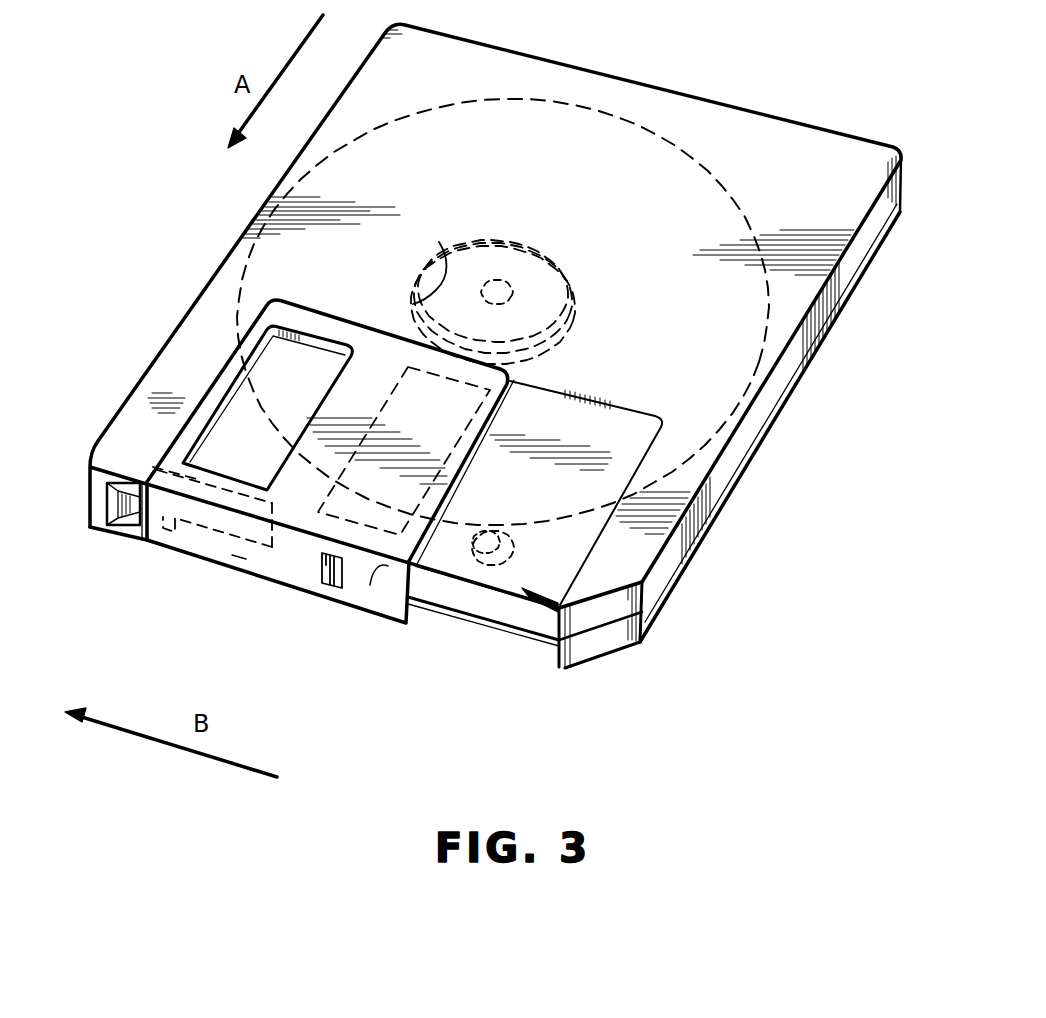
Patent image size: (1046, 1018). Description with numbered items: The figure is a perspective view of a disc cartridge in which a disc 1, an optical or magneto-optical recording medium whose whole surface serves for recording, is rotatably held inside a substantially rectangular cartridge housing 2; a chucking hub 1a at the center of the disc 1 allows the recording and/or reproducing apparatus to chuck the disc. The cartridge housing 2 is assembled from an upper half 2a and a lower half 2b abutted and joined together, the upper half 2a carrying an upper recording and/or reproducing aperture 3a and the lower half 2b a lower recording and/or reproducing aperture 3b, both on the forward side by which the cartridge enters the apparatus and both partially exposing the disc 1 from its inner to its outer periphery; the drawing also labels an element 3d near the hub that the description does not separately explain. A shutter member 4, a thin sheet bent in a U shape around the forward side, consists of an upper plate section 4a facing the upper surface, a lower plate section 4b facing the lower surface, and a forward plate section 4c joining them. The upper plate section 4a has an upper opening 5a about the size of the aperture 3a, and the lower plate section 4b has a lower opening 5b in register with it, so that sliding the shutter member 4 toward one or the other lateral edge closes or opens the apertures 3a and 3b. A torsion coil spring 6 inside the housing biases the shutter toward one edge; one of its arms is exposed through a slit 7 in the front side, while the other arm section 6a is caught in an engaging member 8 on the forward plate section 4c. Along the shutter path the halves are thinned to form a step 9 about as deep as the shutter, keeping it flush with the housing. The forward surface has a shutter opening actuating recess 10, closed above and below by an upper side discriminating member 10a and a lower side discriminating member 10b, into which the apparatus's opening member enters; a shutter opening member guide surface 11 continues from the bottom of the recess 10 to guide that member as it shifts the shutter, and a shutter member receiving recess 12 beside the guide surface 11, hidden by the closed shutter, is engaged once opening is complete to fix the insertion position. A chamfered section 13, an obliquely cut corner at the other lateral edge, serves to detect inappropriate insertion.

The disc 1 is at (760, 318).
The chucking hub 1a is at (527, 270).
The cartridge housing 2 is at (797, 120).
The upper half 2a is at (873, 160).
The lower half 2b is at (892, 212).
The upper recording and/or reproducing aperture 3a is at (457, 440).
The lower recording and/or reproducing aperture 3b is at (383, 590).
The shutter hub portion 3d is at (439, 242).
The shutter member 4 is at (370, 375).
The upper plate section 4a is at (228, 378).
The lower plate section 4b is at (298, 575).
The forward plate section 4c is at (238, 563).
The upper opening 5a is at (264, 328).
The lower opening 5b is at (213, 530).
The torsion coil spring 6 is at (515, 573).
The arm section 6a is at (452, 560).
The slit 7 is at (526, 614).
The engaging member 8 is at (334, 592).
The step 9 is at (640, 390).
The shutter opening actuating recess 10 is at (125, 526).
The upper side discriminating member 10a is at (140, 478).
The lower side discriminating member 10b is at (133, 541).
The shutter opening member guide surface 11 is at (205, 485).
The shutter member receiving recess 12 is at (272, 550).
The chamfered section 13 is at (600, 645).